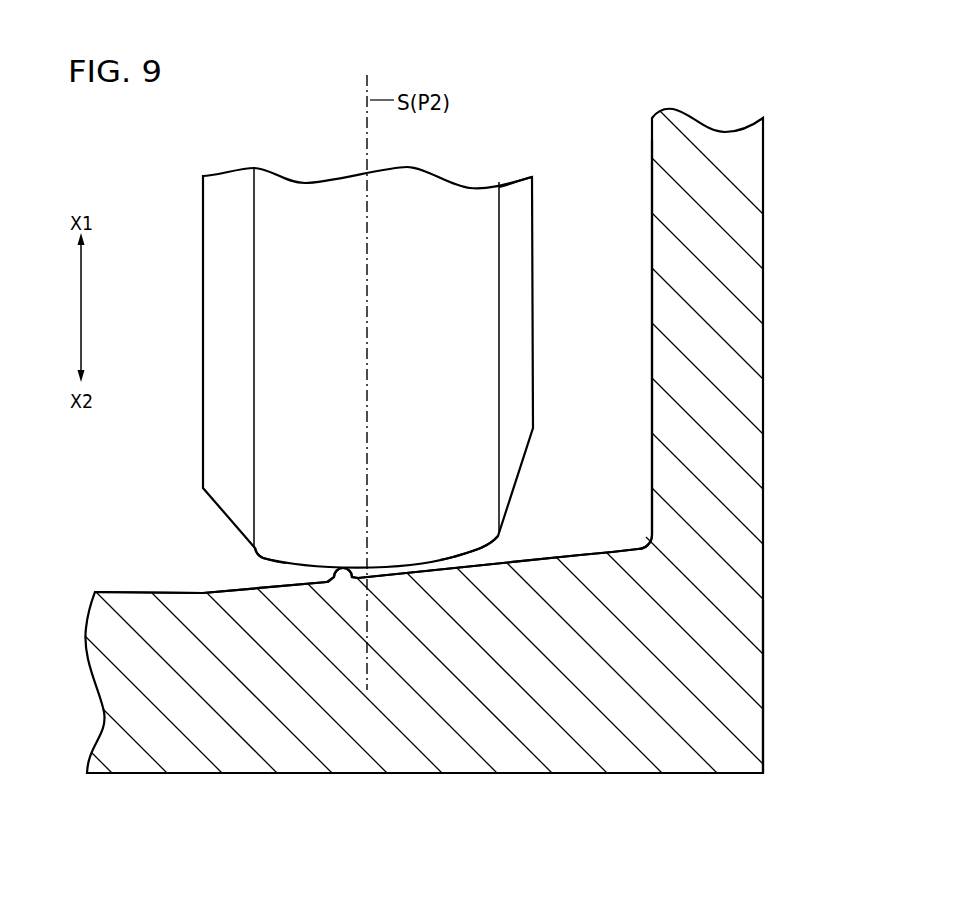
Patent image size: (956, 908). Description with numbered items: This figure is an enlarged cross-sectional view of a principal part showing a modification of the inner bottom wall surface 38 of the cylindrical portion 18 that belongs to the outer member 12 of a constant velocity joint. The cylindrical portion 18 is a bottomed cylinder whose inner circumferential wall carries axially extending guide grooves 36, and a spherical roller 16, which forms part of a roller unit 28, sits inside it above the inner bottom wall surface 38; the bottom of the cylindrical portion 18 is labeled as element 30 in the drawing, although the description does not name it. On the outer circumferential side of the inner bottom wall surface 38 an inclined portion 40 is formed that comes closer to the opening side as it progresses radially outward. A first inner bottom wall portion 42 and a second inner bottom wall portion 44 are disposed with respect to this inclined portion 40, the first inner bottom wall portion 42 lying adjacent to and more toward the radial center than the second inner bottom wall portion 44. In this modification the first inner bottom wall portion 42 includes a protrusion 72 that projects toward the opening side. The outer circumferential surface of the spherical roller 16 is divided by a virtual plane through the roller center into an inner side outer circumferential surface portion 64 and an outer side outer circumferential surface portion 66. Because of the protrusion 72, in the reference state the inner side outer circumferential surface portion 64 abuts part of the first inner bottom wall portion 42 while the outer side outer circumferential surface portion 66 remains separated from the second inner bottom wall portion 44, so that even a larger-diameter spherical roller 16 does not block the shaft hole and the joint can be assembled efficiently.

The outer member 12 is at (733, 790).
The spherical roller 16 is at (533, 229).
The cylindrical portion 18 is at (752, 208).
The roller unit 28 is at (508, 178).
The die bottom surface 30 is at (600, 776).
The guide groove 36 is at (652, 272).
The inner bottom wall surface 38 is at (135, 592).
The inclined portion 40 is at (610, 550).
The first inner bottom wall portion 42 is at (320, 546).
The protrusion 72 is at (341, 570).
The second inner bottom wall portion 44 is at (430, 571).
The inner side outer circumferential surface portion 64 is at (278, 563).
The outer side outer circumferential surface portion 66 is at (453, 562).